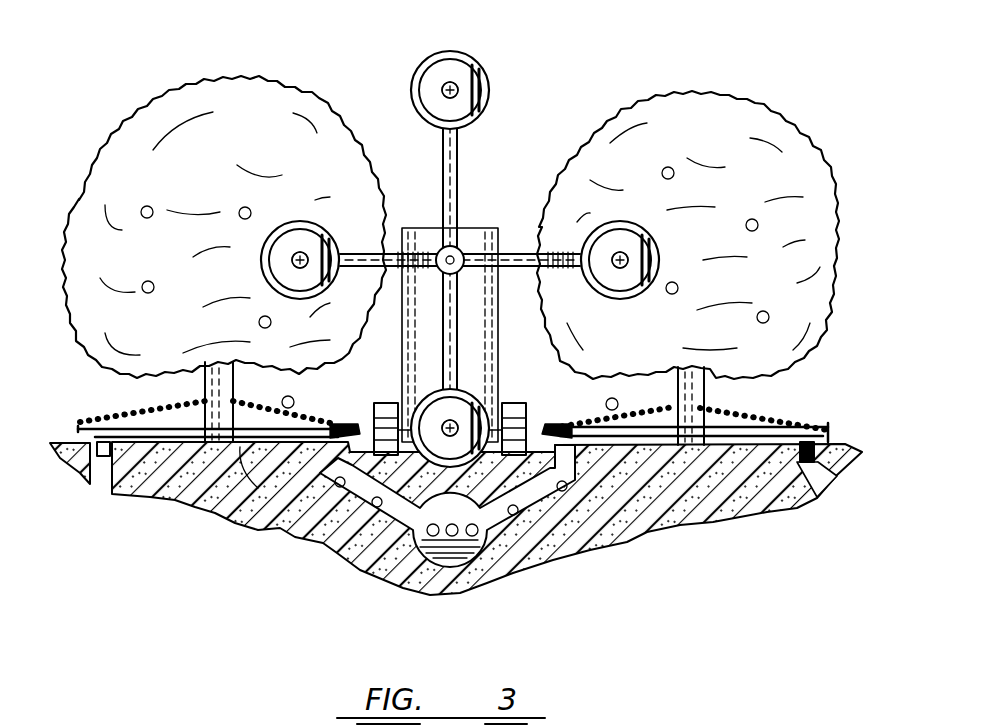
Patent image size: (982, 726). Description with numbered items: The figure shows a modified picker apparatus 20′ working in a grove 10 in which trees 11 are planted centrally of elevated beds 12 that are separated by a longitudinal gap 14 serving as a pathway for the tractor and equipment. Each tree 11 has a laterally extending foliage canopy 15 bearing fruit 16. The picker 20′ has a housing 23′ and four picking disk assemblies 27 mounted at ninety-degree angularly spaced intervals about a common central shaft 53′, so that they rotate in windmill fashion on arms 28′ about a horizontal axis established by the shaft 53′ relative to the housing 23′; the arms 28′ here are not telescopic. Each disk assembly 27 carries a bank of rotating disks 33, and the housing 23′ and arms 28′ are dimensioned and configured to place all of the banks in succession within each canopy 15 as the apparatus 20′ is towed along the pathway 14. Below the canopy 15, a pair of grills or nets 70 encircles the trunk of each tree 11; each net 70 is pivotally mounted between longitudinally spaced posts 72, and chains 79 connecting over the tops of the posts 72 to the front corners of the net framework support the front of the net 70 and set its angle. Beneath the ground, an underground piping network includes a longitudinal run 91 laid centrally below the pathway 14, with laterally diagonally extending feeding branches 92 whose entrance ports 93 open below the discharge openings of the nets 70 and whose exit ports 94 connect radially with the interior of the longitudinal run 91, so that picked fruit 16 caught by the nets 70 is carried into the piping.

The grove 10 is at (716, 72).
The trees 11 is at (80, 200).
The beds 12 is at (184, 478).
The gaps 14 is at (368, 440).
The foliage canopies 15 is at (147, 267).
The fruit 16 is at (242, 207).
The modified embodiment of the picker 20′ is at (534, 144).
The housing 23′ is at (466, 240).
The picking disk assemblies 27 is at (494, 80).
The arms 28′ is at (456, 148).
The rotating disks 33 is at (432, 87).
The common central shaft 53′ is at (458, 256).
The grills or nets 70 is at (160, 418).
The posts 72 is at (218, 447).
The chains 79 is at (165, 410).
The longitudinal runs 91 is at (478, 538).
The feeding branches 92 is at (106, 466).
The entrance ports 93 is at (258, 488).
The exit ports 94 is at (402, 537).